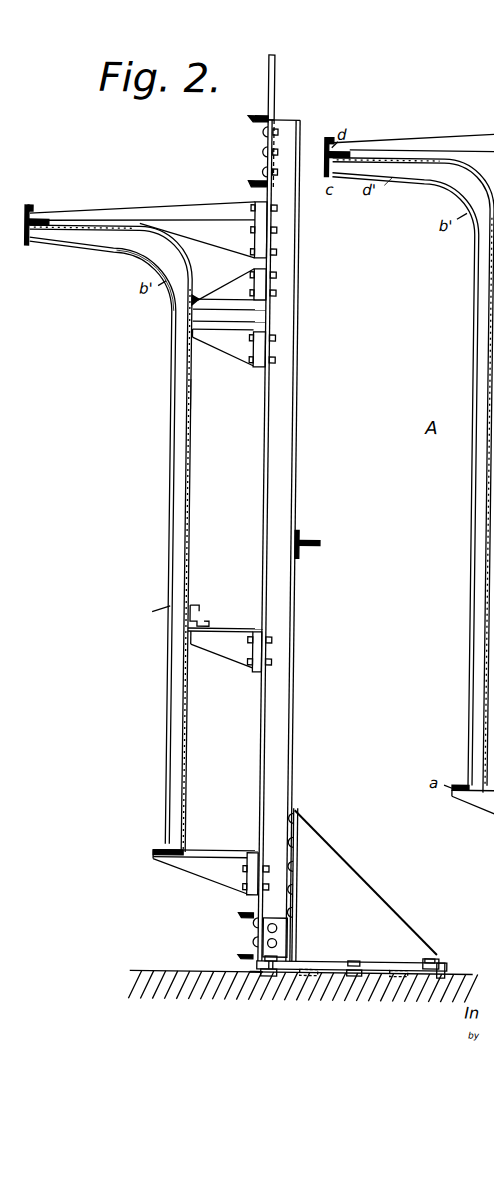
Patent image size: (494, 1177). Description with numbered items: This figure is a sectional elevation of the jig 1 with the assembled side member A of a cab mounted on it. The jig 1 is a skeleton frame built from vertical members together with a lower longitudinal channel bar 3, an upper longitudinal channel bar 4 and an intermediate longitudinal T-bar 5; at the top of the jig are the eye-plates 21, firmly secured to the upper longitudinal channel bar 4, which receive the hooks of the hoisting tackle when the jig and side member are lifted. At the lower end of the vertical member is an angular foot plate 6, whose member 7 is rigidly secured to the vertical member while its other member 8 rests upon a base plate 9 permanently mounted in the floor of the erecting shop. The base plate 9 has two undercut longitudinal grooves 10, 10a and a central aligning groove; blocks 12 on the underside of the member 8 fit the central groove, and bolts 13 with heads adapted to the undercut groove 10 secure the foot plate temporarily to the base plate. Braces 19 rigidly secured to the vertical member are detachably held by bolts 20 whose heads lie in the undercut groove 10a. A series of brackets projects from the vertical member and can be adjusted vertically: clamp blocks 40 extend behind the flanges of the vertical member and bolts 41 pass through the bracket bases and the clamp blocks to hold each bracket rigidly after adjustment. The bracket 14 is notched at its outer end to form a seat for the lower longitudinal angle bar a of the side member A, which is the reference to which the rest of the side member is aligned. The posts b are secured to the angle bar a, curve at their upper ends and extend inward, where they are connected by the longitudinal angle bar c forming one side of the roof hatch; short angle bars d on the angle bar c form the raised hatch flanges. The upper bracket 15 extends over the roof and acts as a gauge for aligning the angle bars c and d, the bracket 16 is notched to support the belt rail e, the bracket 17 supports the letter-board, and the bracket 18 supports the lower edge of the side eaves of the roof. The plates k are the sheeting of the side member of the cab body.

The jig 1 is at (318, 373).
The eye-plates 21 is at (272, 108).
The upper longitudinal channel bar 4 is at (251, 120).
The upper bracket 15 is at (214, 203).
The bracket 18 is at (215, 292).
The bracket 17 is at (230, 350).
The intermediate longitudinal T-bar 5 is at (302, 539).
The bracket 16 is at (234, 628).
The clamp blocks 40 is at (266, 640).
The bolts 41 is at (273, 644).
The bracket 14 is at (223, 846).
The braces 19 is at (263, 939).
The longitudinal channel bar 3 is at (246, 915).
The member of foot plate 7 is at (302, 878).
The foot plate 6 is at (364, 891).
The member of foot plate 8 is at (383, 963).
The bolts 13 is at (438, 957).
The base plate 9 is at (454, 968).
The bolts 20 is at (274, 980).
The blocks 12 is at (357, 975).
The undercut longitudinal groove 10 is at (448, 978).
The undercut longitudinal groove 10a is at (263, 971).
The posts b is at (80, 250).
The longitudinal angle bar c is at (22, 236).
The short angle bars d is at (29, 215).
The belt rail e is at (205, 607).
The plates k is at (190, 393).
The lower longitudinal angle bar a is at (161, 851).
The side member A is at (147, 532).